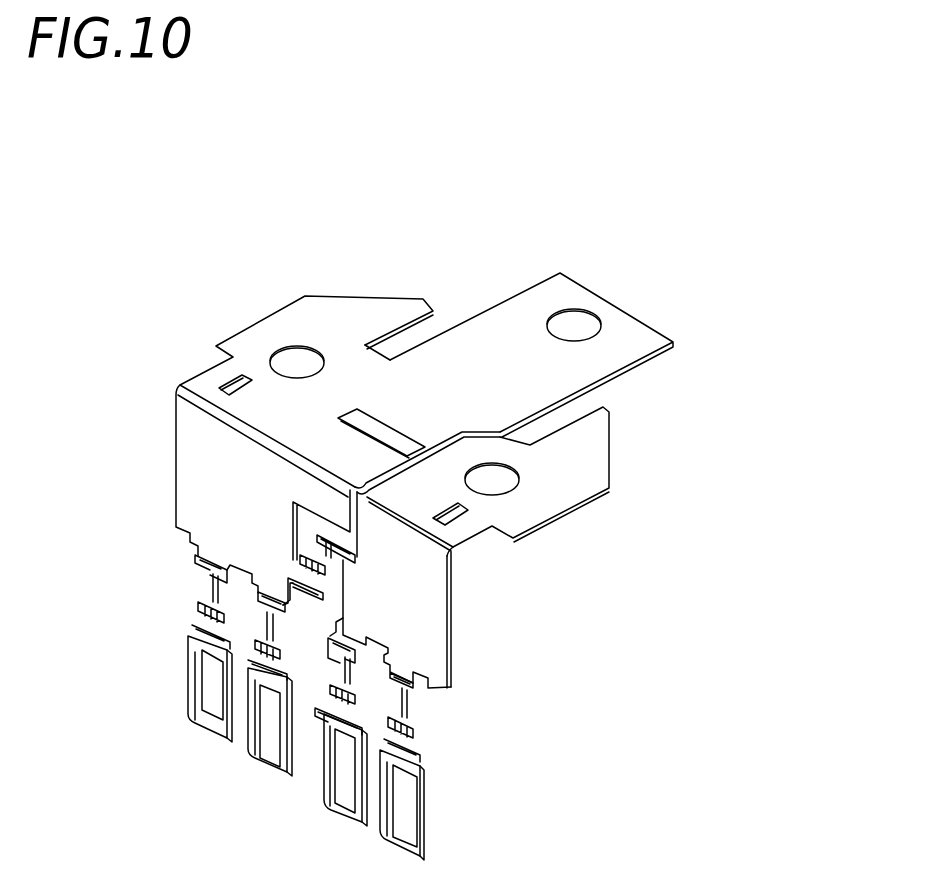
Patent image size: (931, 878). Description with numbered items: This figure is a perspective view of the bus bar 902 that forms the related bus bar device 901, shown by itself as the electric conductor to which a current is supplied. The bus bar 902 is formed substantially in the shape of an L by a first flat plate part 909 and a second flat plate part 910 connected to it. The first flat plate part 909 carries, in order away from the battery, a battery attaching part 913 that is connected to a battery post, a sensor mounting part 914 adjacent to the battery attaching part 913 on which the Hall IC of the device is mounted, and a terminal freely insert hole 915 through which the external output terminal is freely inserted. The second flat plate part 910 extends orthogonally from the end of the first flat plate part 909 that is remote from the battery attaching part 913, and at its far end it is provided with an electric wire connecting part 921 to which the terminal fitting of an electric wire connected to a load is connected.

The bus bar device 901 is at (636, 192).
The bus bar 902 is at (632, 575).
The first flat plate part 909 is at (491, 543).
The second flat plate part 910 is at (463, 641).
The battery attaching part 913 is at (612, 322).
The sensor mounting part 914 is at (472, 345).
The terminal freely insert hole 915 is at (378, 415).
The electric wire connecting part 921 is at (181, 644).